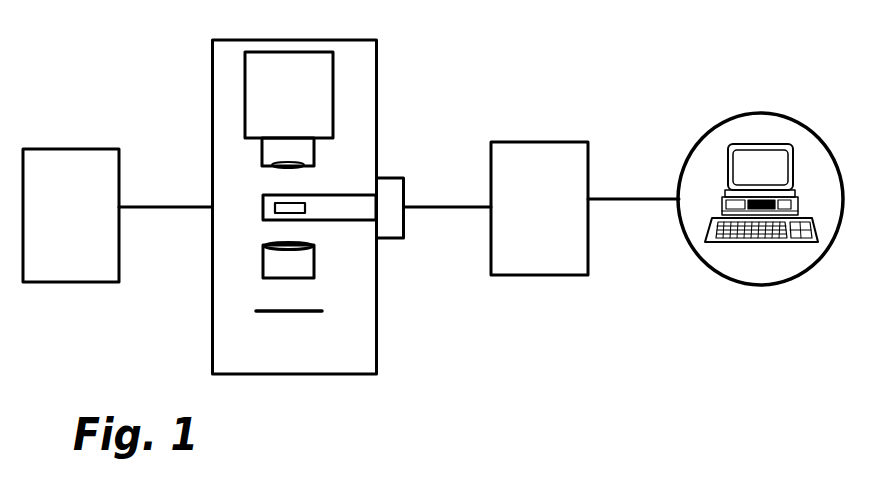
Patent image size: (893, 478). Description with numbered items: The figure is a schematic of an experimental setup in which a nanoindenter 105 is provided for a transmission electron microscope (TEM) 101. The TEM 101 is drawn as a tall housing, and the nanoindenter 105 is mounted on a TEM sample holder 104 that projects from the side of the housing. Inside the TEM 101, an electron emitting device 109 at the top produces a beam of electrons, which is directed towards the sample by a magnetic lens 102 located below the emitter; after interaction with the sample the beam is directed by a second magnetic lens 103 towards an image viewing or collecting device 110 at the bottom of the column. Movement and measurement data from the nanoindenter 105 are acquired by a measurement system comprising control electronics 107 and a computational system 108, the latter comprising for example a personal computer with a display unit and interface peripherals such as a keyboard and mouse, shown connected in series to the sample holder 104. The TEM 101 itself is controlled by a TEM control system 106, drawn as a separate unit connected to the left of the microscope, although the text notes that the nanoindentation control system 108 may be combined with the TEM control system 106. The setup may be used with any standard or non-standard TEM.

The transmission electron microscope 101 is at (392, 44).
The magnetic lens 102 is at (269, 165).
The magnetic lens 103 is at (298, 250).
The TEM sample holder 104 is at (338, 209).
The nanoindenter 105 is at (288, 210).
The TEM control system 106 is at (90, 221).
The control electronics 107 is at (558, 214).
The computational system 108 is at (712, 140).
The electron emitting device 109 is at (266, 89).
The image viewing or collecting device 110 is at (307, 311).